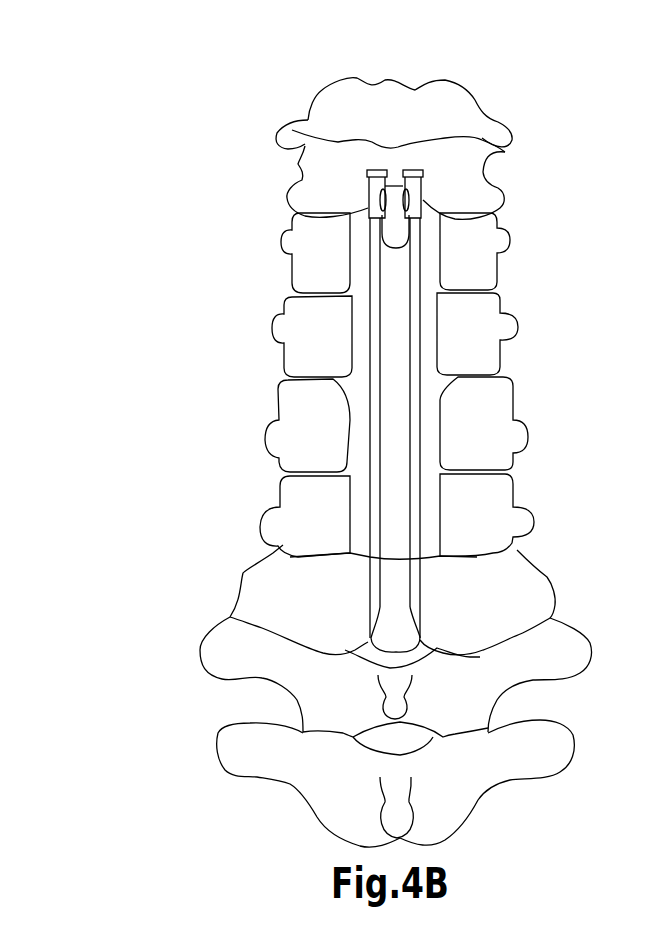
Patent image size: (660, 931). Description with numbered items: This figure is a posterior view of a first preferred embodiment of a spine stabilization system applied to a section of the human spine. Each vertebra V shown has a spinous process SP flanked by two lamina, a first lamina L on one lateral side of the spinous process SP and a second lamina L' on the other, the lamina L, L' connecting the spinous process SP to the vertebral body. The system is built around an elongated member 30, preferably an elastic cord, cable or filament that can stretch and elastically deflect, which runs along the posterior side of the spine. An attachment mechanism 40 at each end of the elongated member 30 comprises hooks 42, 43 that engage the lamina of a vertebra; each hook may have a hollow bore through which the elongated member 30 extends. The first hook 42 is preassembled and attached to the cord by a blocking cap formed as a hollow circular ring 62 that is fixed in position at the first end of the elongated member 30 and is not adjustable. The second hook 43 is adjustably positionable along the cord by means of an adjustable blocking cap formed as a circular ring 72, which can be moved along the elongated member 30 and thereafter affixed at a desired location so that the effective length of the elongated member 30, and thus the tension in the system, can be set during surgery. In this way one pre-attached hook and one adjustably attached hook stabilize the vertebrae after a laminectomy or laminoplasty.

The elongated member 30 is at (422, 420).
The attachment mechanism 40 is at (372, 210).
The first hook 42 is at (370, 205).
The second hook 43 is at (423, 197).
The hollow circular ring 62 is at (383, 235).
The adjustable circular ring 72 is at (420, 170).
The first lamina L is at (288, 383).
The second lamina L' is at (468, 385).
The spinous process SP is at (398, 628).
The vertebra V is at (515, 605).